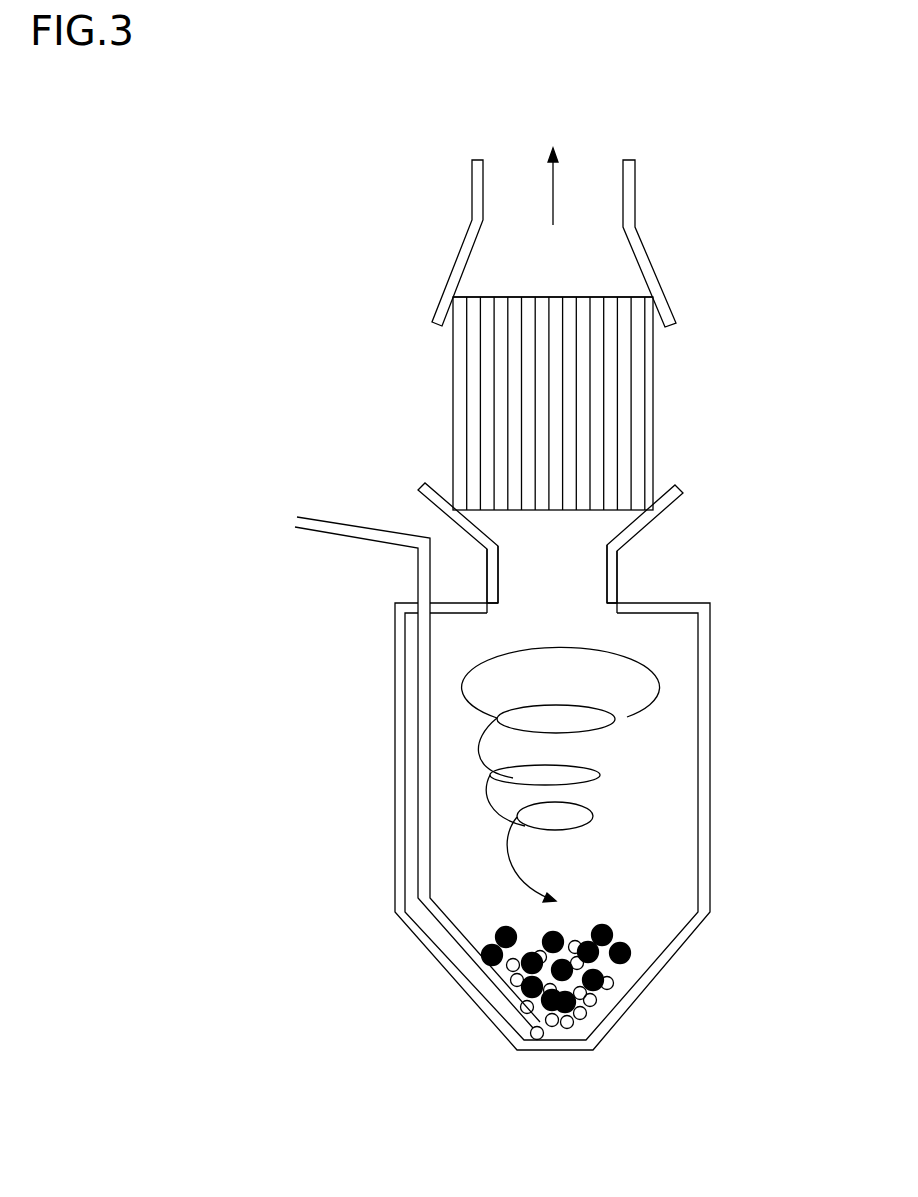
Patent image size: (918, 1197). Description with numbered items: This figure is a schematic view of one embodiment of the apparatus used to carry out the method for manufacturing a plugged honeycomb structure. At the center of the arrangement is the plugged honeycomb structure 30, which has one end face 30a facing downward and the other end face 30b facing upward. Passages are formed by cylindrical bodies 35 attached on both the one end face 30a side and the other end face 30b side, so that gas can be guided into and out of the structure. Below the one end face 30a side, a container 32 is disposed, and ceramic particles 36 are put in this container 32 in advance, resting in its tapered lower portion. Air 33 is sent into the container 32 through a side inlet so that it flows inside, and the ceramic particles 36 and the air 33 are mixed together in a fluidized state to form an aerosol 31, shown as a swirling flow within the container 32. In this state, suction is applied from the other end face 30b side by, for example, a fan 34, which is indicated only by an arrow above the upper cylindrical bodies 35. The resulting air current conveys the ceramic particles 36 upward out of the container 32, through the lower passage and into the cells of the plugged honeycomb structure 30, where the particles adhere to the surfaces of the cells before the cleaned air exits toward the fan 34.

The plugged honeycomb structure 30 is at (635, 398).
The one end face 30a is at (630, 542).
The other end face 30b is at (613, 297).
The aerosol 31 is at (628, 650).
The container 32 is at (710, 763).
The air 33 is at (357, 502).
The fan 34 is at (555, 160).
The cylindrical bodies 35 is at (633, 193).
The ceramic particles 36 is at (613, 923).